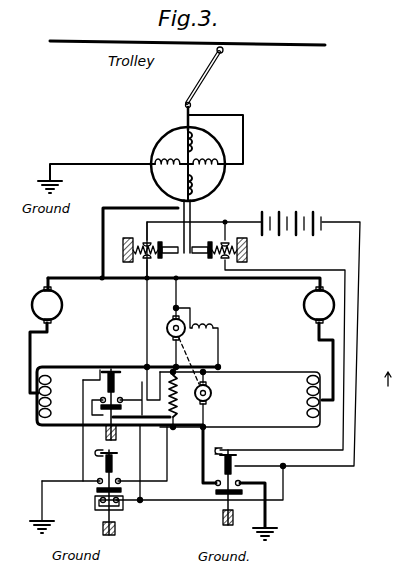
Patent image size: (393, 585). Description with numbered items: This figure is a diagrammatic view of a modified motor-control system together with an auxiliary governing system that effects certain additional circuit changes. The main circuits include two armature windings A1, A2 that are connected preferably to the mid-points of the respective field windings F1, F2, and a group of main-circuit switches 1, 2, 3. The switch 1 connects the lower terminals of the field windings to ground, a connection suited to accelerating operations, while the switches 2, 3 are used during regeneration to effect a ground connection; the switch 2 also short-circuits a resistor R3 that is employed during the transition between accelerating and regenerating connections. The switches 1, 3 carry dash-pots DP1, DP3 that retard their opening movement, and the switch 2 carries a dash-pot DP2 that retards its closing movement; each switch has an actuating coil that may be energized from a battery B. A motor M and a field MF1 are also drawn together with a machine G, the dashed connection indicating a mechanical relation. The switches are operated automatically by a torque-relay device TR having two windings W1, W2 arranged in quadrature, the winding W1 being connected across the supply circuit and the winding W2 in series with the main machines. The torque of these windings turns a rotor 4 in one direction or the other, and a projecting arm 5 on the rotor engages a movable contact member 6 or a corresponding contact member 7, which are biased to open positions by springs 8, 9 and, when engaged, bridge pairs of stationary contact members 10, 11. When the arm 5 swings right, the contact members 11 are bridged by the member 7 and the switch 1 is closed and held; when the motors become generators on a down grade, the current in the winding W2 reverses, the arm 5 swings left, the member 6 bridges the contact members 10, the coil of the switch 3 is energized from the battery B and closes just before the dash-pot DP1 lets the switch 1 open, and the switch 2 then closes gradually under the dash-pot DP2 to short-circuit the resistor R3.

The main-circuit switch 1 is at (216, 490).
The main-circuit switch 2 is at (122, 404).
The main-circuit switch 3 is at (112, 484).
The rotor 4 is at (162, 180).
The projecting arm 5 is at (192, 210).
The movable contact member 6 is at (168, 244).
The movable contact member 7 is at (202, 244).
The spring 8 is at (140, 262).
The spring 9 is at (218, 258).
The stationary contact members 10 is at (143, 241).
The stationary contact members 11 is at (227, 244).
The winding W1 is at (158, 151).
The winding W2 is at (198, 144).
The torque-relay device TR is at (189, 164).
The battery B is at (291, 213).
The armature winding A1 is at (61, 335).
The armature winding A2 is at (302, 343).
The motor M is at (167, 324).
The motor field MF1 is at (205, 338).
The field winding F1 is at (127, 396).
The field winding F2 is at (306, 398).
The generator G is at (203, 384).
The resistor R3 is at (190, 402).
The dash-pot DP1 is at (223, 479).
The dash-pot DP2 is at (107, 425).
The dash-pot DP3 is at (124, 495).